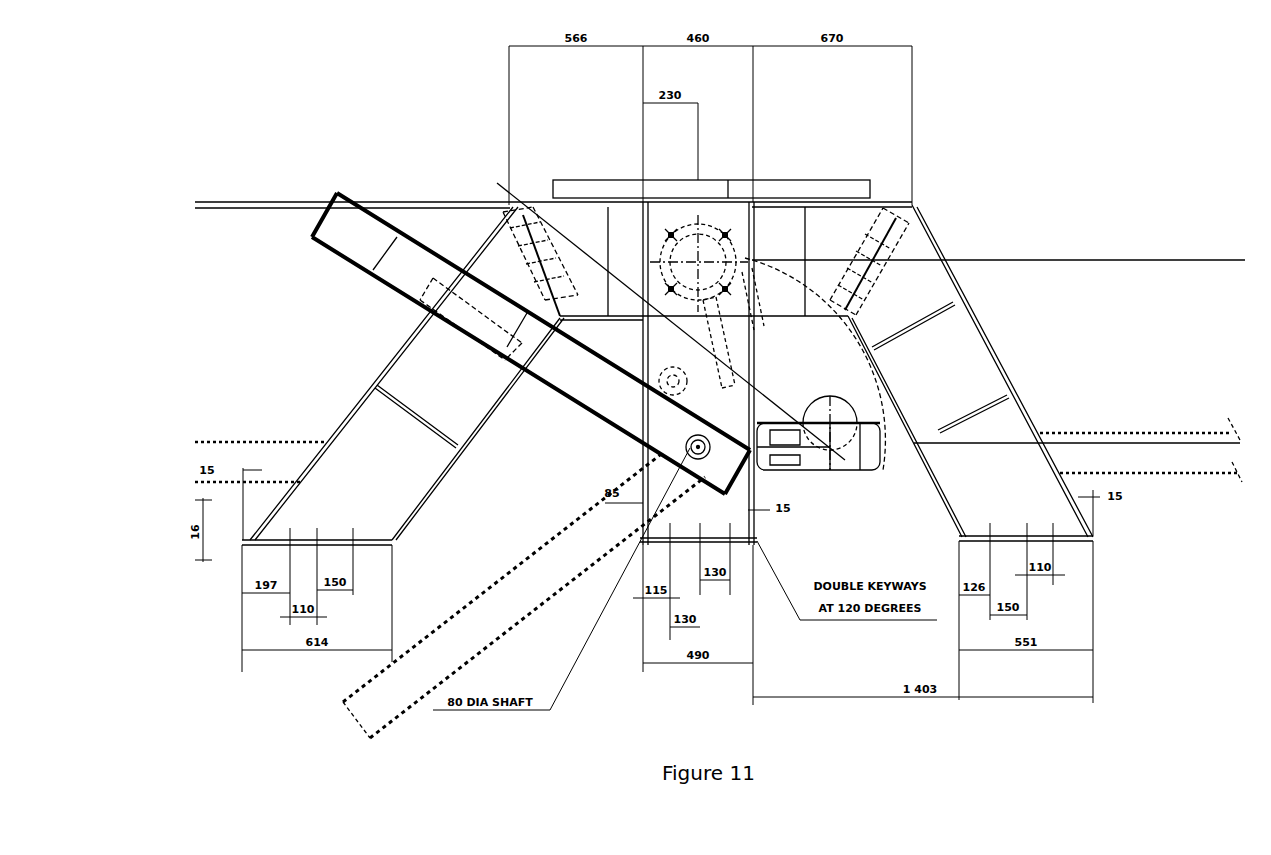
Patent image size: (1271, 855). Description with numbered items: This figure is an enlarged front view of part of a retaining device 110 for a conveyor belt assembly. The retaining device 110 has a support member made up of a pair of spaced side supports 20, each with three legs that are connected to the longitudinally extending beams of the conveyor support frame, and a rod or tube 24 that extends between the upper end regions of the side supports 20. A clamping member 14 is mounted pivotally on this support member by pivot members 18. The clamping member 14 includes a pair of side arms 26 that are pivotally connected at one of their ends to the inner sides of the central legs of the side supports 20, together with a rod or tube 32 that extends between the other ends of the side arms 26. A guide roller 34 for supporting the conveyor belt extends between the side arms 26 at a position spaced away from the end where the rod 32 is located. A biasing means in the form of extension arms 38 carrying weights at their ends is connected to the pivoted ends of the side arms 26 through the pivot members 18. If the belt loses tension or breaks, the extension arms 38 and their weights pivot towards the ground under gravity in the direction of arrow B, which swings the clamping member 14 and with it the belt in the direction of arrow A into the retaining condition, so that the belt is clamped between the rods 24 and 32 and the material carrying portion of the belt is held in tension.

The retaining device 110 is at (993, 233).
The side support 20 is at (1013, 372).
The rod or tube 24 is at (784, 165).
The extension arm 38 is at (560, 390).
The guide roller 34 is at (757, 400).
The clamping member 14 is at (851, 476).
The rod or tube 32 is at (842, 425).
The side arm 26 is at (812, 480).
The pivot member 18 is at (730, 523).
The arrow A is at (900, 372).
The arrow B is at (318, 338).